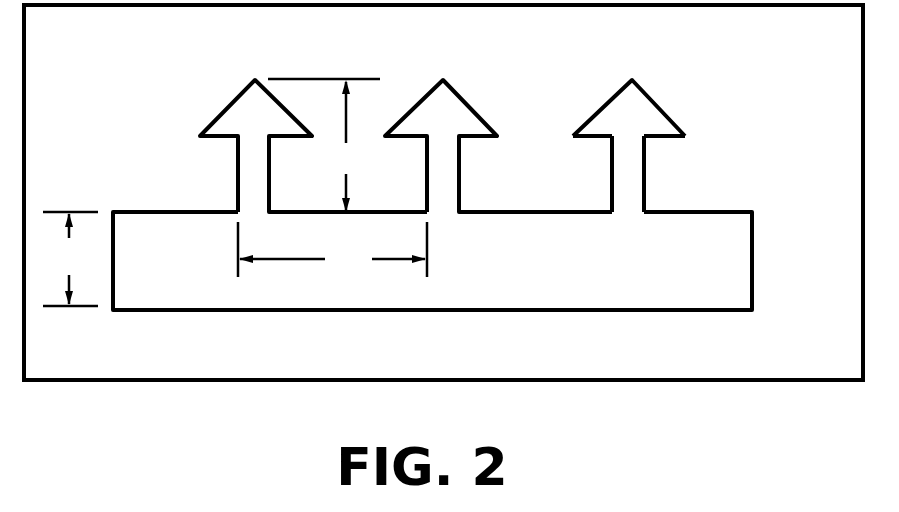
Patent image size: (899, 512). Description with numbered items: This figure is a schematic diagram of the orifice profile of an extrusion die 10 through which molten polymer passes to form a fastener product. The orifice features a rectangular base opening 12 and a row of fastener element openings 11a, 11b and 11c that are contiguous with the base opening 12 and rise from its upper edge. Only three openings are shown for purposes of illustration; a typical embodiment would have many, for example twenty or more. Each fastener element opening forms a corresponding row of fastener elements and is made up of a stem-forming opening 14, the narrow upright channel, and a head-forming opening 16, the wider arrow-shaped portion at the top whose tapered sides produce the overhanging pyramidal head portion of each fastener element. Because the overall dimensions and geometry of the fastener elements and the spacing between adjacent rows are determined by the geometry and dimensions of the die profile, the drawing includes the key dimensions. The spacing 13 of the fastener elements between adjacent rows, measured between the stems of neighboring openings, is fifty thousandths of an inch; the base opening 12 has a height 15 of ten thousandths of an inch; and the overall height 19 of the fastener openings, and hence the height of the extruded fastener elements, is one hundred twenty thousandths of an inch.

The extrusion die 10 is at (652, 360).
The rectangular base opening 12 is at (724, 287).
The fastener element opening 11a is at (230, 117).
The fastener element opening 11b is at (456, 105).
The fastener element opening 11c is at (641, 127).
The stem-forming opening 14 is at (641, 180).
The head-forming opening 16 is at (637, 122).
The spacing 13 is at (332, 249).
The height of base opening 15 is at (70, 259).
The overall height 19 is at (324, 145).